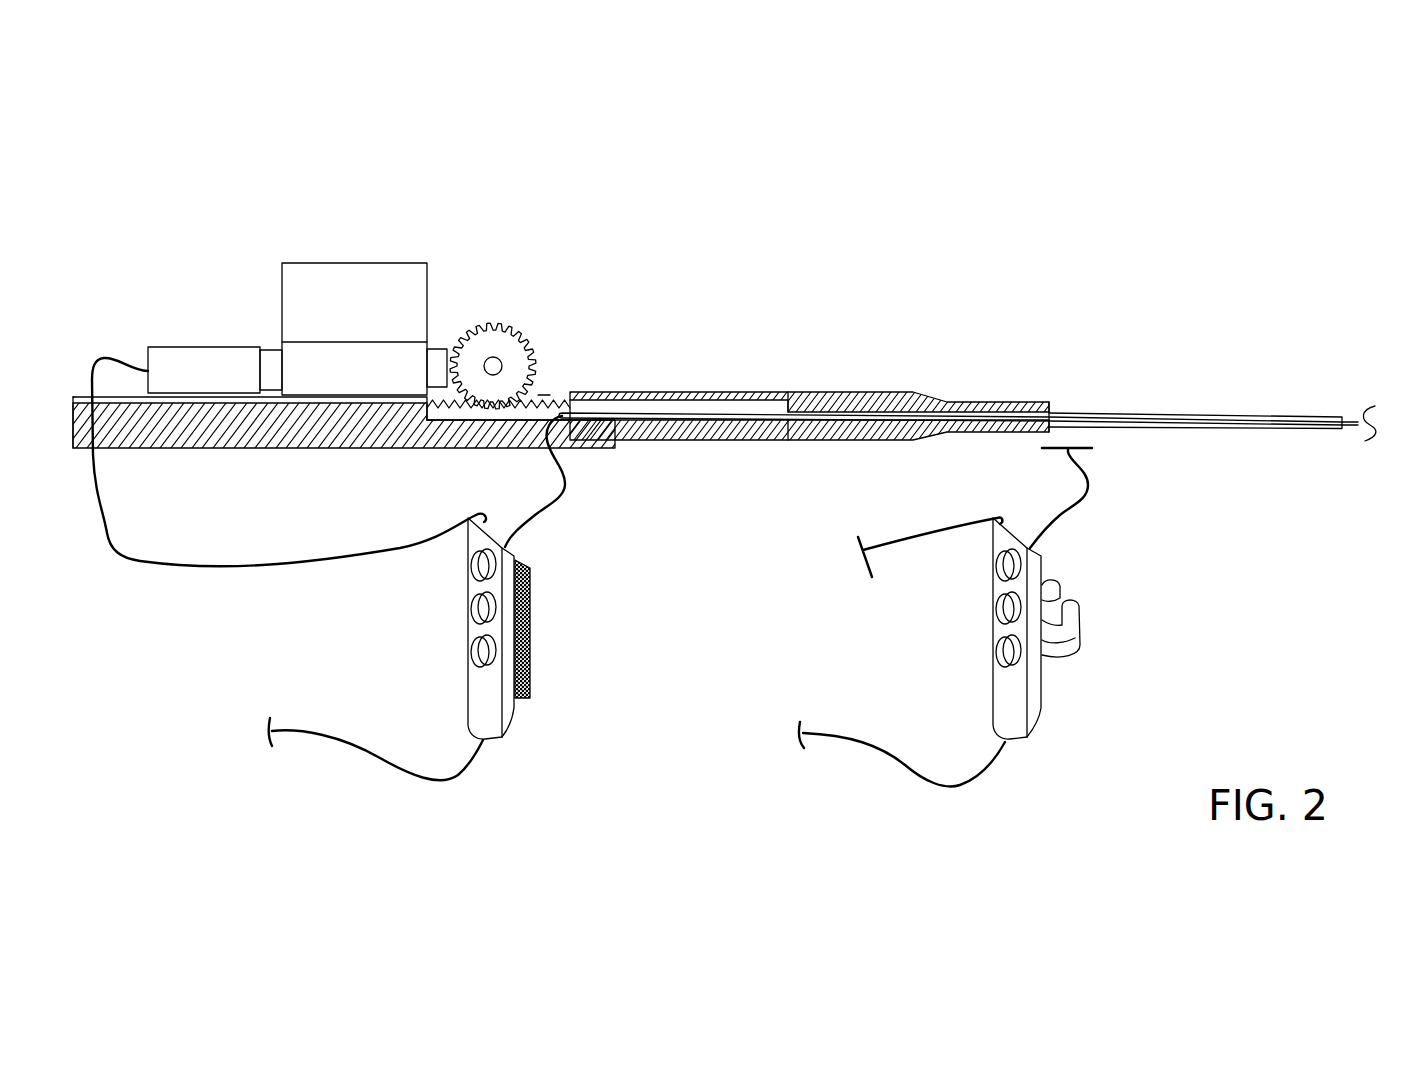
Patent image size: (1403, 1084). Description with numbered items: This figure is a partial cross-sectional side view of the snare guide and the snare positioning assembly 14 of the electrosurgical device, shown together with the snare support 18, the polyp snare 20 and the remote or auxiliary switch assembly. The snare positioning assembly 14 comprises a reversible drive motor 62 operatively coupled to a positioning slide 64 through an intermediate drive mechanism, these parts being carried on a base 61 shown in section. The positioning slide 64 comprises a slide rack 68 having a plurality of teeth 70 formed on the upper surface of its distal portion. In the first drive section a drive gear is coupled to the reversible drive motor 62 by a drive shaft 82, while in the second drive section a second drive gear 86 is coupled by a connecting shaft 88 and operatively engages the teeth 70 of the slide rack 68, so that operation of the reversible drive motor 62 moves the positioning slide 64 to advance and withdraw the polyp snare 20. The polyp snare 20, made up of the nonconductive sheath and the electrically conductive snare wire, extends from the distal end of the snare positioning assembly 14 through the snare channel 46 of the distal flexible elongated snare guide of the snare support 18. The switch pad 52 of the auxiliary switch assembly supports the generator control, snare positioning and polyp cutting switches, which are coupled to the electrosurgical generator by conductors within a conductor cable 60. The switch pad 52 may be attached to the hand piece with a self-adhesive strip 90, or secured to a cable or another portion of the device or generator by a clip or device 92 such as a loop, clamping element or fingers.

The snare positioning assembly 14 is at (715, 147).
The snare support 18 is at (878, 250).
The polyp snare 20 is at (1365, 310).
The snare channel 46 is at (918, 308).
The switch pad 52 is at (466, 678).
The conductor cable 60 is at (332, 732).
The base plate 61 is at (208, 448).
The reversible drive motor 62 is at (197, 347).
The positioning slide 64 is at (651, 256).
The slide rack 68 is at (506, 415).
The teeth 70 is at (543, 395).
The drive shaft 82 is at (453, 358).
The second drive gear 86 is at (482, 340).
The connecting shaft 88 is at (496, 357).
The self-adhesive strip 90 is at (530, 657).
The clip or device 92 is at (1080, 640).